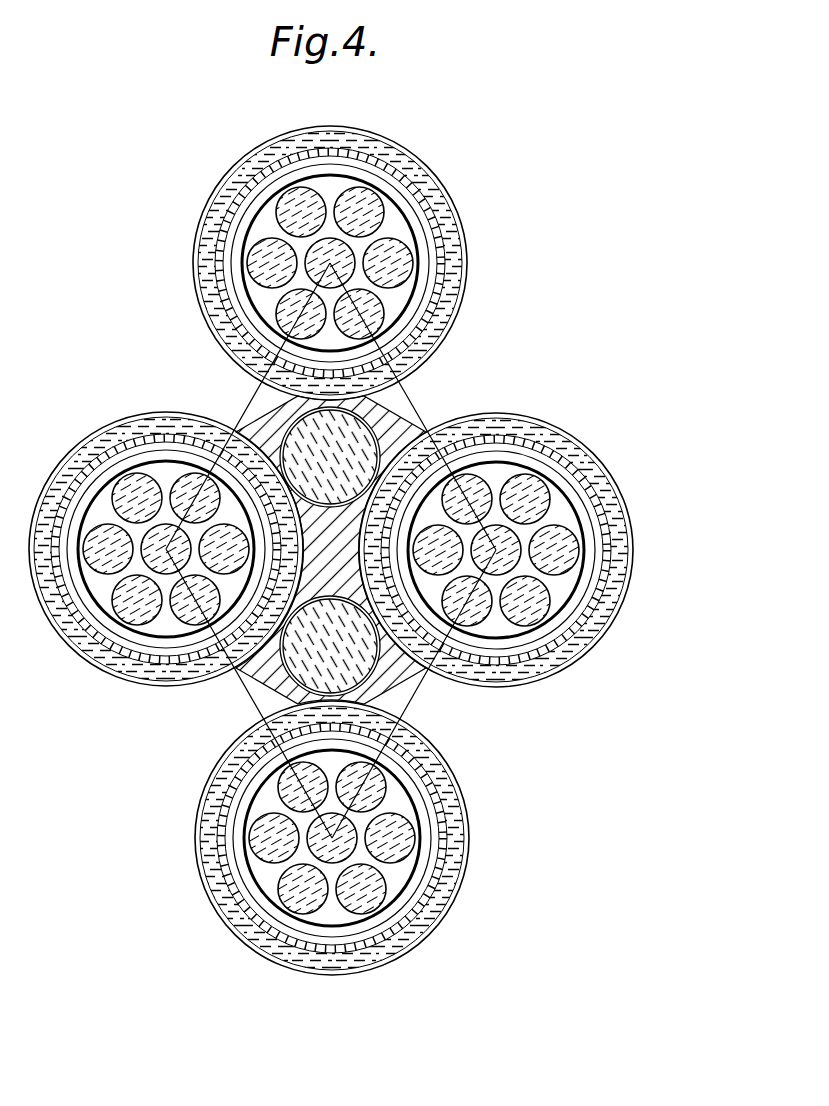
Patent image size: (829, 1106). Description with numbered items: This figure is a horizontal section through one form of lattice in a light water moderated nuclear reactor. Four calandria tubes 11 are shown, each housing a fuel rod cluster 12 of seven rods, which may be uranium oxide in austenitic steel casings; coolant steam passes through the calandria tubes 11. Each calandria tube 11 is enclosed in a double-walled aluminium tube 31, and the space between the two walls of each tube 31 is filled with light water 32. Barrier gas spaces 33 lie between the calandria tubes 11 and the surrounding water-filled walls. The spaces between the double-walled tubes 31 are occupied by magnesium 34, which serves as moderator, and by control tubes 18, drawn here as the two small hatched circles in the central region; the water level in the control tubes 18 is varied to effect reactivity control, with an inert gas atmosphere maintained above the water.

The calandria tube 11 is at (410, 218).
The fuel rod cluster 12 is at (497, 585).
The control tube 18 is at (292, 432).
The double-walled aluminium tube 31 is at (225, 305).
The light water 32 is at (433, 323).
The barrier gas space 33 is at (393, 343).
The magnesium 34 is at (268, 418).